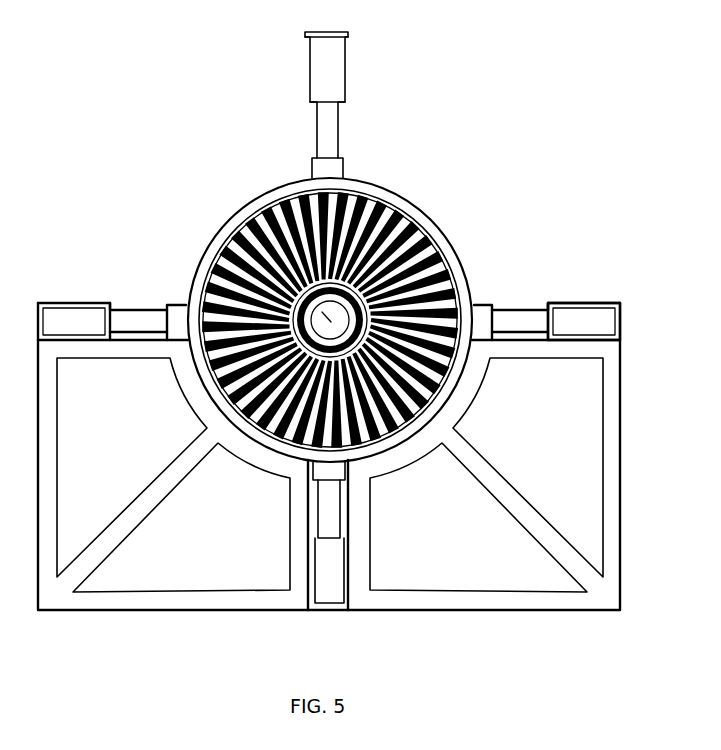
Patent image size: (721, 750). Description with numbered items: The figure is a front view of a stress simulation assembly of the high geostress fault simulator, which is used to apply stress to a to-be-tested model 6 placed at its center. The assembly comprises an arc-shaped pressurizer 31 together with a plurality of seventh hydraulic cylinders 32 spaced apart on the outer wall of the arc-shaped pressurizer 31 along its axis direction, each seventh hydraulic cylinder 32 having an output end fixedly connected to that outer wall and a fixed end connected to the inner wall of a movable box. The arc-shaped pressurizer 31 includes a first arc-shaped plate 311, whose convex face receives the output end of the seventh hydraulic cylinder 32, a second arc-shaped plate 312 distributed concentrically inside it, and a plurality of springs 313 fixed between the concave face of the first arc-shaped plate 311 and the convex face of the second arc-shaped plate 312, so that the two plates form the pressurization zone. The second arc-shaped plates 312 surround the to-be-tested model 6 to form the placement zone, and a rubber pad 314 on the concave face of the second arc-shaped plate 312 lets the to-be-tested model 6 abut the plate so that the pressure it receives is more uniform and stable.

The to-be-tested model 6 is at (203, 247).
The arc-shaped pressurizer 31 is at (568, 255).
The first arc-shaped plate 311 is at (373, 177).
The second arc-shaped plate 312 is at (407, 197).
The springs 313 is at (450, 237).
The rubber pad 314 is at (455, 283).
The seventh hydraulic cylinder 32 is at (568, 317).